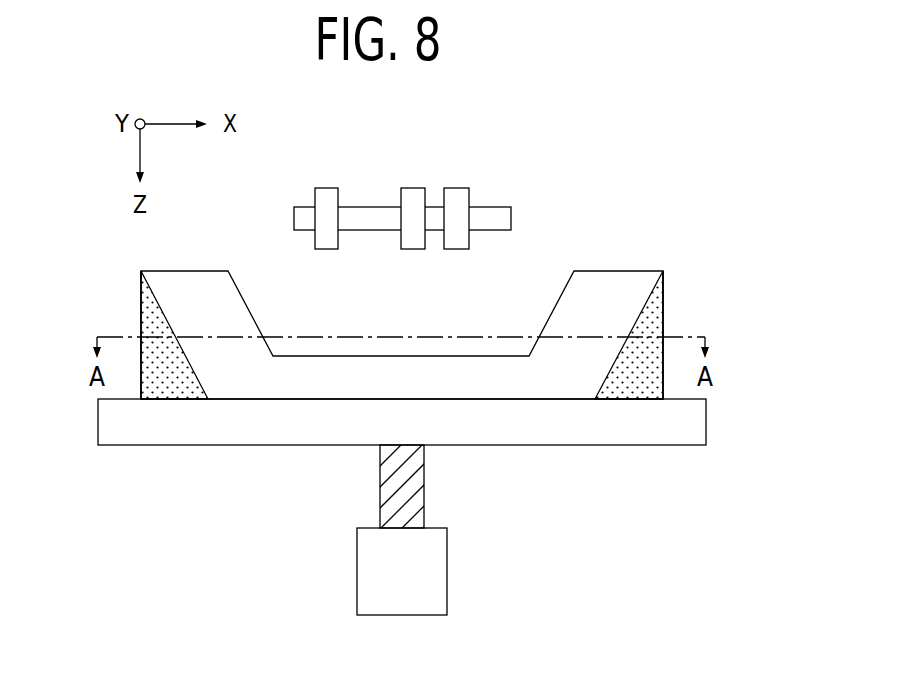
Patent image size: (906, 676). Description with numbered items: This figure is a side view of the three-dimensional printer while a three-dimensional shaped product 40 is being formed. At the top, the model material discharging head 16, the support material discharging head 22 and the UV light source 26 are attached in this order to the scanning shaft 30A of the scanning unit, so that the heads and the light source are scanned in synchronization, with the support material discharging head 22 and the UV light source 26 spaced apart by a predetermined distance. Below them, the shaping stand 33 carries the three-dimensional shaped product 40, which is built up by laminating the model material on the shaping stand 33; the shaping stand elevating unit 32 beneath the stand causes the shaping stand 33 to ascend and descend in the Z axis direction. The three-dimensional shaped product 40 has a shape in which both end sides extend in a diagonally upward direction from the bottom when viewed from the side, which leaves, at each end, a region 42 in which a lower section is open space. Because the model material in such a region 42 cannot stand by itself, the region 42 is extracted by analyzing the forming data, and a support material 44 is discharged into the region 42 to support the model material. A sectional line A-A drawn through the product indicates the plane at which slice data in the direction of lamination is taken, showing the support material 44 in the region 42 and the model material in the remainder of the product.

The model material discharging head 16 is at (460, 188).
The support material discharging head 22 is at (414, 188).
The UV light source 26 is at (329, 188).
The scanning shaft 30A is at (511, 217).
The shaping stand elevating unit 32 is at (447, 572).
The shaping stand 33 is at (640, 435).
The three-dimensional shaped product 40 is at (191, 278).
The region in which a lower section is open space 42 is at (126, 327).
The support material 44 is at (170, 390).